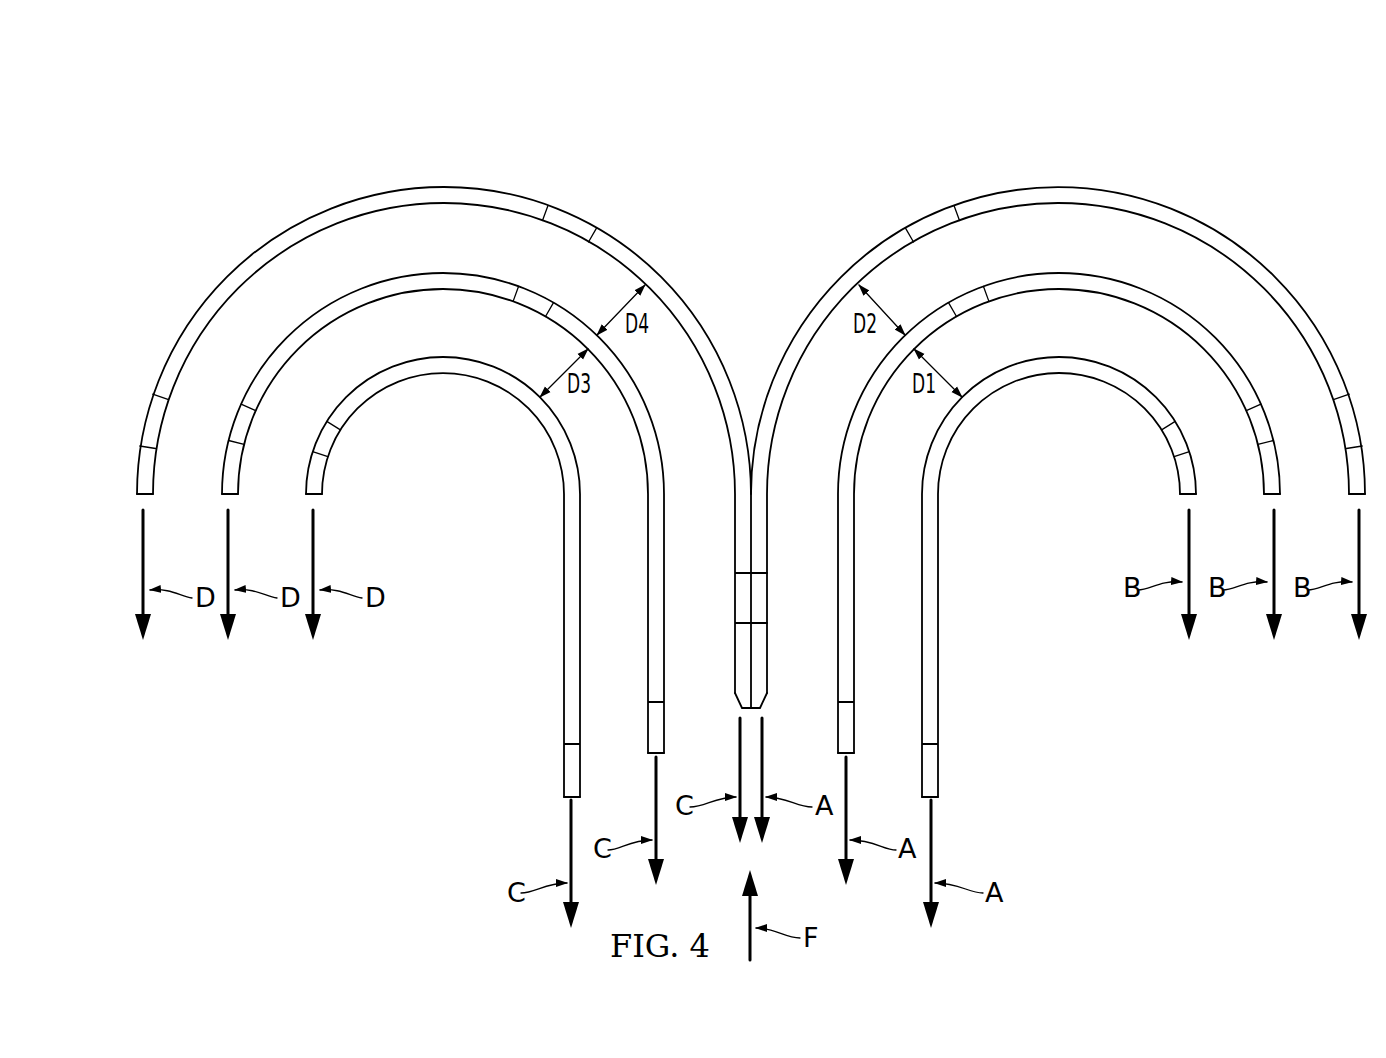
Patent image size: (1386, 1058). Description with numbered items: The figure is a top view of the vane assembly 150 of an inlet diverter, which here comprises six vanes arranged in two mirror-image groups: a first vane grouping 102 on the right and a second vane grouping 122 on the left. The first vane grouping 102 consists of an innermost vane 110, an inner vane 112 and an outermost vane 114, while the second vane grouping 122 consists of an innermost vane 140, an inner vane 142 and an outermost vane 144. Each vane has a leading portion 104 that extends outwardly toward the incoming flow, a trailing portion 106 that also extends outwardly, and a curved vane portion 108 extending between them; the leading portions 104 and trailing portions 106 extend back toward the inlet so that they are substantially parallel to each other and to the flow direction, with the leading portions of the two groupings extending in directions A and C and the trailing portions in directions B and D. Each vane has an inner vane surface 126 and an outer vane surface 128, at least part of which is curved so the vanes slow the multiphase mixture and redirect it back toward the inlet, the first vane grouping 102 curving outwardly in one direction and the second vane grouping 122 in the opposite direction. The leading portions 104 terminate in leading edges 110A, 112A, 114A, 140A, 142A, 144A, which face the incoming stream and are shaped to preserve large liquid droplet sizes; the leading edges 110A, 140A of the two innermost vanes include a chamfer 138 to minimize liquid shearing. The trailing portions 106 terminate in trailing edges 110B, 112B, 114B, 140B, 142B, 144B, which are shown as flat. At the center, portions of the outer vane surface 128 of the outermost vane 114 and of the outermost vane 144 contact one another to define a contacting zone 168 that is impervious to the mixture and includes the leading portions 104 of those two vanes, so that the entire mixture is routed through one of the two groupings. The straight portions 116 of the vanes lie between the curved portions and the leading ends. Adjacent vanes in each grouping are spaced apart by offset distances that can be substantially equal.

The vane assembly 150 is at (1226, 102).
The first vane grouping 102 is at (1141, 159).
The second vane grouping 122 is at (361, 159).
The curved vane portion 108 is at (277, 217).
The outer vane surface 128 is at (443, 186).
The inner vane surface 126 is at (206, 330).
The trailing portion 106 is at (168, 480).
The leading portion 104 is at (550, 776).
The straight portion of tube 116 is at (637, 593).
The chamfer 138 is at (730, 695).
The contacting zone 168 is at (751, 404).
The innermost vane 140 is at (563, 557).
The inner vane 142 is at (641, 410).
The outermost vane 144 is at (679, 308).
The innermost vane 110 is at (940, 557).
The inner vane 112 is at (862, 410).
The outermost vane 114 is at (823, 308).
The leading edge 140A is at (568, 800).
The leading edge 142A is at (652, 758).
The leading edge 144A is at (732, 714).
The leading edge 110A is at (935, 800).
The leading edge 112A is at (850, 758).
The leading edge 114A is at (770, 714).
The trailing edge 140B is at (320, 498).
The trailing edge 142B is at (235, 498).
The trailing edge 144B is at (150, 498).
The trailing edge 110B is at (1183, 498).
The trailing edge 112B is at (1268, 498).
The trailing edge 114B is at (1353, 498).